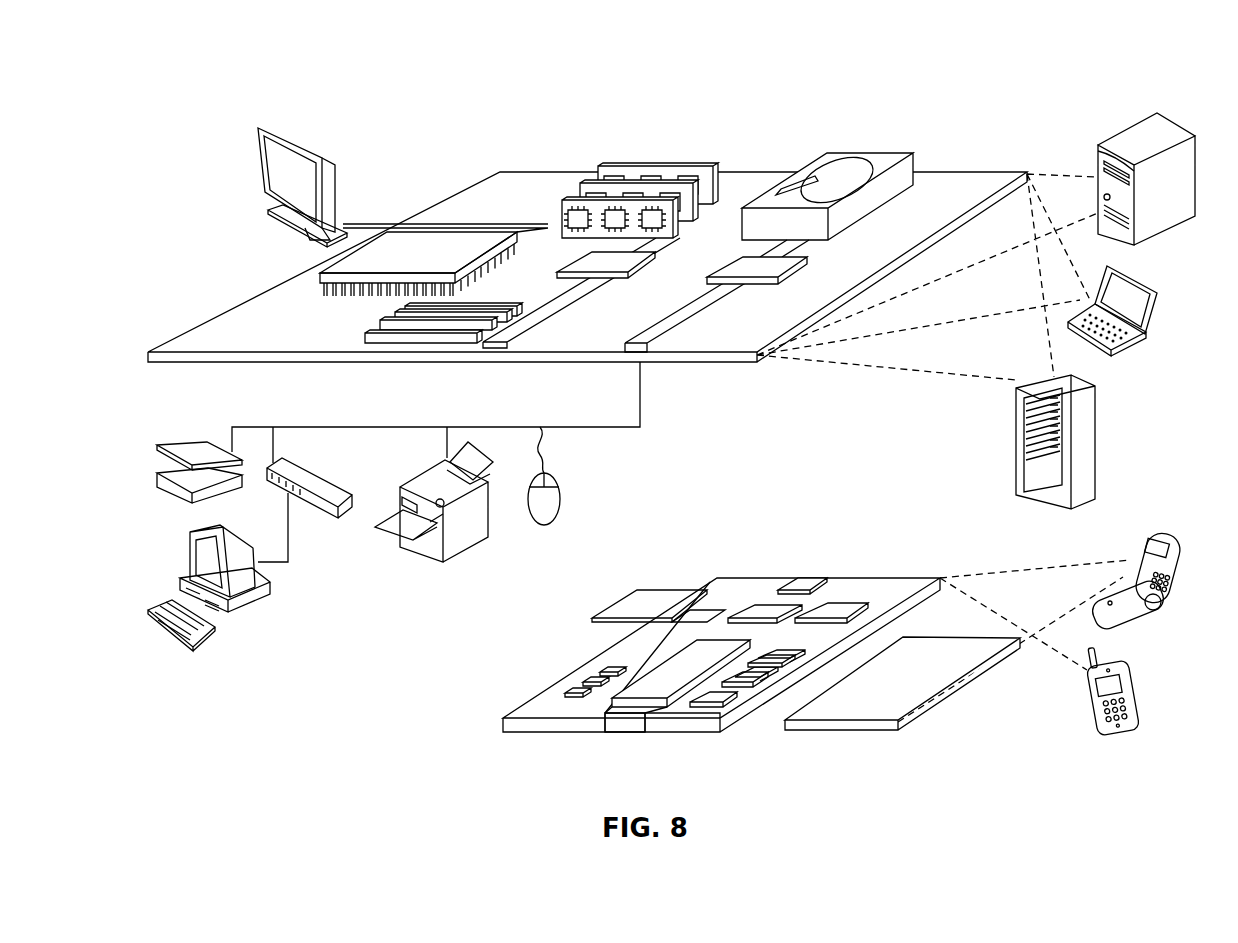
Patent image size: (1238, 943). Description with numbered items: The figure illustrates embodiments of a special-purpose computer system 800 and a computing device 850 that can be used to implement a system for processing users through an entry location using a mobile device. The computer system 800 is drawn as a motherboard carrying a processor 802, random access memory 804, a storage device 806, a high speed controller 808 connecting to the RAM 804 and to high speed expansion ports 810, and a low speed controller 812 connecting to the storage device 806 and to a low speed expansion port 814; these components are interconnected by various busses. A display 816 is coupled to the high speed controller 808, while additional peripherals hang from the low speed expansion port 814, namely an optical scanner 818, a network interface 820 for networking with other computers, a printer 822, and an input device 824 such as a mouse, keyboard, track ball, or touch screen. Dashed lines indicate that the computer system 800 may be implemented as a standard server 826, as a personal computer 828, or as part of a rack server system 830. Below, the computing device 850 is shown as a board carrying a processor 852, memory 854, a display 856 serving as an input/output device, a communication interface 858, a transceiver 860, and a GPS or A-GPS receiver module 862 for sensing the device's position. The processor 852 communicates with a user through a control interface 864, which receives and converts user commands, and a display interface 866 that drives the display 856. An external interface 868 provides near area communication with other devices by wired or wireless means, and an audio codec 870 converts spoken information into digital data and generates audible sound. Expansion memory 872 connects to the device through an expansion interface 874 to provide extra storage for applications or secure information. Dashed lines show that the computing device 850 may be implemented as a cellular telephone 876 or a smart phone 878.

The special-purpose computer system 800 is at (452, 140).
The processor 802 is at (418, 264).
The random access memory (RAM) 804 is at (657, 163).
The storage device 806 is at (827, 194).
The high speed controller 808 is at (581, 293).
The high speed expansion ports 810 is at (385, 320).
The low speed controller 812 is at (757, 270).
The low speed expansion port 814 is at (673, 338).
The display 816 is at (320, 136).
The optical scanner 818 is at (196, 440).
The network interface 820 is at (340, 480).
The printer 822 is at (433, 566).
The input device 824 is at (562, 505).
The standard server 826 is at (1182, 130).
The personal computer 828 is at (1146, 333).
The rack server system 830 is at (1094, 453).
The computing device 850 is at (462, 757).
The processor 852 is at (660, 708).
The memory 854 is at (580, 686).
The display 856 is at (902, 683).
The communication interface 858 is at (761, 603).
The transceiver 860 is at (838, 603).
The GPS or A-GPS receiver module 862 is at (808, 580).
The control interface 864 is at (748, 688).
The display interface 866 is at (712, 704).
The external interface 868 is at (608, 733).
The audio codec 870 is at (785, 668).
The expansion memory 872 is at (643, 588).
The expansion interface 874 is at (708, 587).
The cellular telephone 876 is at (1156, 613).
The smart phone 878 is at (1134, 733).